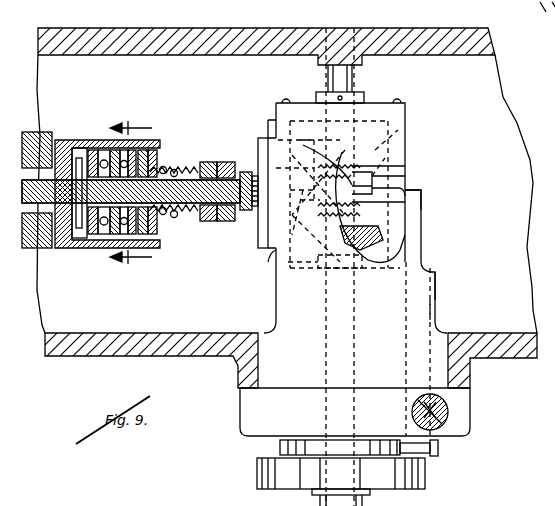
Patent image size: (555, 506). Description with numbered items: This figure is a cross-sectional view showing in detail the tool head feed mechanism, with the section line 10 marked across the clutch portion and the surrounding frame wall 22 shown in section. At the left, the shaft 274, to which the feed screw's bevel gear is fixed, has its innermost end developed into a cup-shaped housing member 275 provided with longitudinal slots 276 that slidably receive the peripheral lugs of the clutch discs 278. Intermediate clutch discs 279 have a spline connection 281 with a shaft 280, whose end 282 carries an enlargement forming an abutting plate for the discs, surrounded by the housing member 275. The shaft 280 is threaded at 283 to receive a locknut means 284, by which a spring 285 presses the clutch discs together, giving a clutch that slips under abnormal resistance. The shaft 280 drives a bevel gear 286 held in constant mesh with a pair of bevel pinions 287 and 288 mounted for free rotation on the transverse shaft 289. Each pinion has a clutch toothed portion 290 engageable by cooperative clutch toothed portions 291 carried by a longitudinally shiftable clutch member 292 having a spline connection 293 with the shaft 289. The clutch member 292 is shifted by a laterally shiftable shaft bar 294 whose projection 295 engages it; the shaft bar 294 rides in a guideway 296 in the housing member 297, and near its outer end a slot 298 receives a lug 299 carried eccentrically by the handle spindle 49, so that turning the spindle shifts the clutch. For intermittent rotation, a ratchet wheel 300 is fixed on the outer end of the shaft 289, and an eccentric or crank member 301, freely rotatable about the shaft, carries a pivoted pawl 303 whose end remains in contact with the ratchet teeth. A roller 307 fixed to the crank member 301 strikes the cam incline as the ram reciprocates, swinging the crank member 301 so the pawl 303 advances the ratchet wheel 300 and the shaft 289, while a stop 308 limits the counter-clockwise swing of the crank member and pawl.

The section line 10- 10 is at (139, 194).
The frame wall 22 is at (65, 359).
The handle spindle 49 is at (448, 412).
The shaft 274 is at (50, 138).
The cup-shaped housing member 275 is at (75, 150).
The longitudinal slots 276 is at (96, 148).
The clutch discs 278 is at (113, 243).
The clutch discs 279 is at (178, 160).
The shaft 280 is at (168, 222).
The spline connection 281 is at (100, 243).
The end of shaft 282 is at (68, 238).
The threaded portion 283 is at (244, 168).
The locknut means 284 is at (230, 162).
The spring 285 is at (195, 162).
The bevel gear 286 is at (280, 122).
The bevel pinion 287 is at (395, 136).
The bevel pinion 288 is at (380, 245).
The shaft 289 is at (323, 305).
The clutch toothed portion 290 is at (378, 208).
The clutch toothed portions 291 is at (380, 182).
The clutch member 292 is at (265, 253).
The spline connection 293 is at (302, 274).
The shaft bar 294 is at (432, 257).
The projection 295 is at (315, 132).
The guideway 296 is at (435, 310).
The housing member 297 is at (435, 282).
The slot 298 is at (450, 423).
The lug 299 is at (450, 398).
The ratchet wheel 300 is at (280, 447).
The crank member 301 is at (258, 480).
The pawl 303 is at (423, 467).
The roller 307 is at (368, 504).
The stop 308 is at (438, 452).